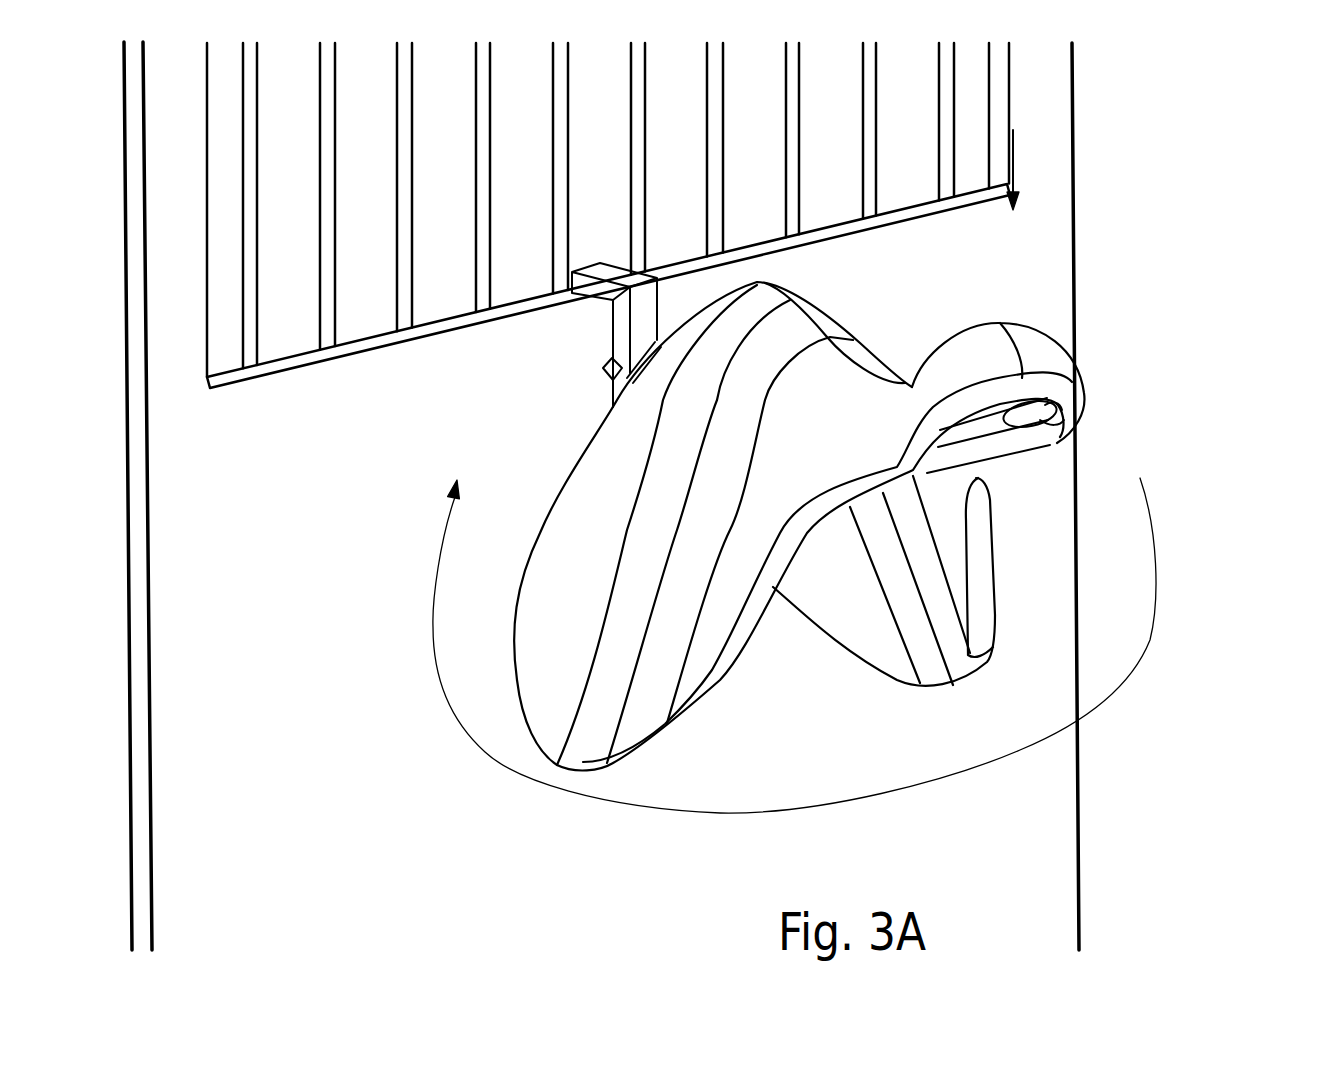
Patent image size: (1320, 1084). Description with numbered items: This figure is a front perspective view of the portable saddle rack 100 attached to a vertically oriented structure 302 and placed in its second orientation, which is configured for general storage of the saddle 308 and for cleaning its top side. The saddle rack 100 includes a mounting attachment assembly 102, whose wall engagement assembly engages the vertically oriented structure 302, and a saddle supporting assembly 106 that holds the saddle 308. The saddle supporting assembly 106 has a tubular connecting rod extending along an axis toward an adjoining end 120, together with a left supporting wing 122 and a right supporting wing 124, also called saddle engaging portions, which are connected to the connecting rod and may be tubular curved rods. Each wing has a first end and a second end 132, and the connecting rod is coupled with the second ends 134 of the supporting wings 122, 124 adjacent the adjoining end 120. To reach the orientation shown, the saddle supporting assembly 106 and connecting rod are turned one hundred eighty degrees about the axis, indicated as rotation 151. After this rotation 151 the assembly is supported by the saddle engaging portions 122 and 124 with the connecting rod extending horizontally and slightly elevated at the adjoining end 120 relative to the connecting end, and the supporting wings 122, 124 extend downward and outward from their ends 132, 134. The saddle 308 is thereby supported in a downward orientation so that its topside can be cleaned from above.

The saddle rack 100 is at (1147, 224).
The mounting attachment assembly 102 is at (582, 346).
The saddle supporting assembly 106 is at (1045, 497).
The adjoining end 120 is at (1045, 410).
The left supporting wing 122 is at (1043, 411).
The right supporting wing 124 is at (983, 440).
The second end 132 is at (657, 338).
The second ends of the supporting wings 134 is at (1045, 421).
The rotation 151 is at (707, 813).
The vertically oriented structure 302 is at (240, 520).
The saddle 308 is at (1050, 378).